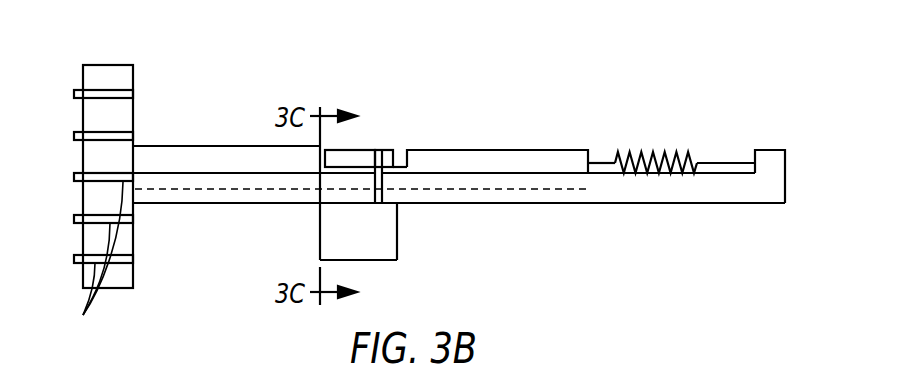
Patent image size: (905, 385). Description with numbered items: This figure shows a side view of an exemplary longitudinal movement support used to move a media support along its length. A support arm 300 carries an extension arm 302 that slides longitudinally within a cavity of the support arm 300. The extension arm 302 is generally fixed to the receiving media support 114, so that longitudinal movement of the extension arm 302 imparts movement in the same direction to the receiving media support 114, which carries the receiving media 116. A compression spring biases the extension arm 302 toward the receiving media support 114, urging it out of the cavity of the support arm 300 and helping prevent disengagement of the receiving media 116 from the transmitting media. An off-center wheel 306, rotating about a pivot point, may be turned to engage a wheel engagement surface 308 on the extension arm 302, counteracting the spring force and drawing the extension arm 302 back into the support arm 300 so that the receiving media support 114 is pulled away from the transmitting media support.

The receiving media support 114 is at (105, 75).
The receiving media 116 is at (85, 265).
The support arm 300 is at (608, 193).
The extension arm 302 is at (485, 162).
The off-center wheel 306 is at (355, 150).
The wheel engagement surface 308 is at (402, 160).